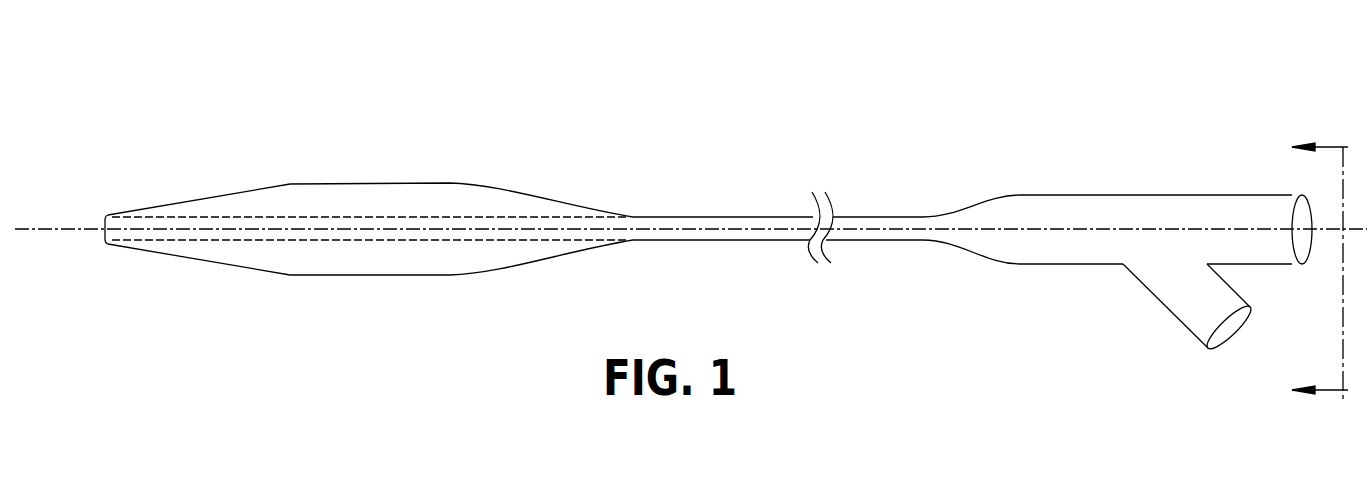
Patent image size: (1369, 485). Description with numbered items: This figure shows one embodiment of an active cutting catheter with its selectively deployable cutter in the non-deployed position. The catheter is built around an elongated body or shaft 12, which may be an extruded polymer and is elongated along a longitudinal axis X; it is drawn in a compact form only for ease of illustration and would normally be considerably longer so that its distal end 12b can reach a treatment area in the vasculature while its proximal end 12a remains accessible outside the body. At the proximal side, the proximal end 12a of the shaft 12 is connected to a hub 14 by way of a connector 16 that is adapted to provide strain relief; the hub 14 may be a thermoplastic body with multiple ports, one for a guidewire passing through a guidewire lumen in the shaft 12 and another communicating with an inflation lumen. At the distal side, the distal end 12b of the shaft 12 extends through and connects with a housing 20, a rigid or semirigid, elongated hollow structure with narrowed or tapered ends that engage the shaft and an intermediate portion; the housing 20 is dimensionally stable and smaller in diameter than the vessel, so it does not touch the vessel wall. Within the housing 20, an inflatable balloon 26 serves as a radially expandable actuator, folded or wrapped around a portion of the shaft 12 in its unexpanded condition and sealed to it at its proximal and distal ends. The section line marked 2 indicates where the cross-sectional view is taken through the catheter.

The shaft 12 is at (712, 217).
The proximal end 12a is at (892, 175).
The distal end 12b is at (115, 193).
The hub 14 is at (1217, 136).
The connector 16 is at (1012, 175).
The housing 20 is at (463, 187).
The inflatable balloon 26 is at (437, 240).
The longitudinal axis X is at (39, 229).
The section line 2- 2 is at (1320, 272).